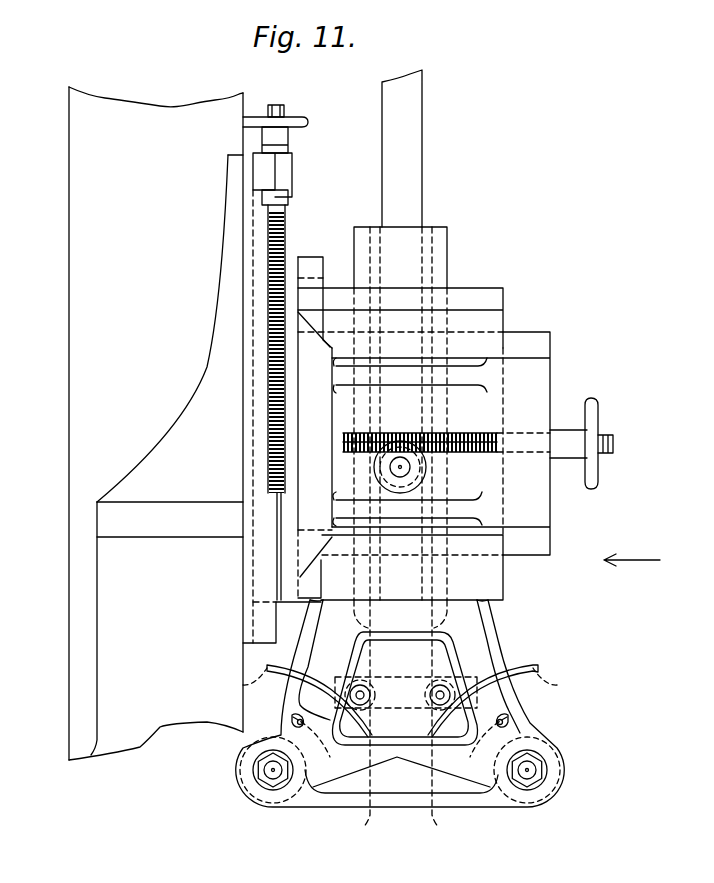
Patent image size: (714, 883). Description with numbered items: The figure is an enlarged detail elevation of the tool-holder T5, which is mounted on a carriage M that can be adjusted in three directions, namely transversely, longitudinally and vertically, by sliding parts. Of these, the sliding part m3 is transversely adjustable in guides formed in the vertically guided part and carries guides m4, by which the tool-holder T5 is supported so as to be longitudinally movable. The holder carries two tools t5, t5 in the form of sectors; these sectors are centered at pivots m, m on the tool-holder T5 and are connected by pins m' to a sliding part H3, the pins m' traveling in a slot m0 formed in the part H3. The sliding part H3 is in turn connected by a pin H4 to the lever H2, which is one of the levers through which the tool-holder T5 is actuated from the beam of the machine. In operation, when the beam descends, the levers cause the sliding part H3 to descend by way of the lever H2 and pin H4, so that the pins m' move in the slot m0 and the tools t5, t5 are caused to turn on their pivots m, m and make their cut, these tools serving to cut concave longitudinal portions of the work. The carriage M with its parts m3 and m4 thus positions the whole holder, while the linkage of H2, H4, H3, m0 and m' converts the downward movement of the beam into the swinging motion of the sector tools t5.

The lever H2 is at (405, 185).
The sliding part H3 is at (433, 257).
The pin H4 is at (405, 468).
The carriage M is at (505, 397).
The sliding part m3 is at (287, 374).
The guides m4 is at (488, 543).
The pins m' is at (400, 680).
The slot m0 is at (401, 703).
The pivots m is at (407, 783).
The tools t5 is at (250, 735).
The tool-holder T5 is at (413, 800).